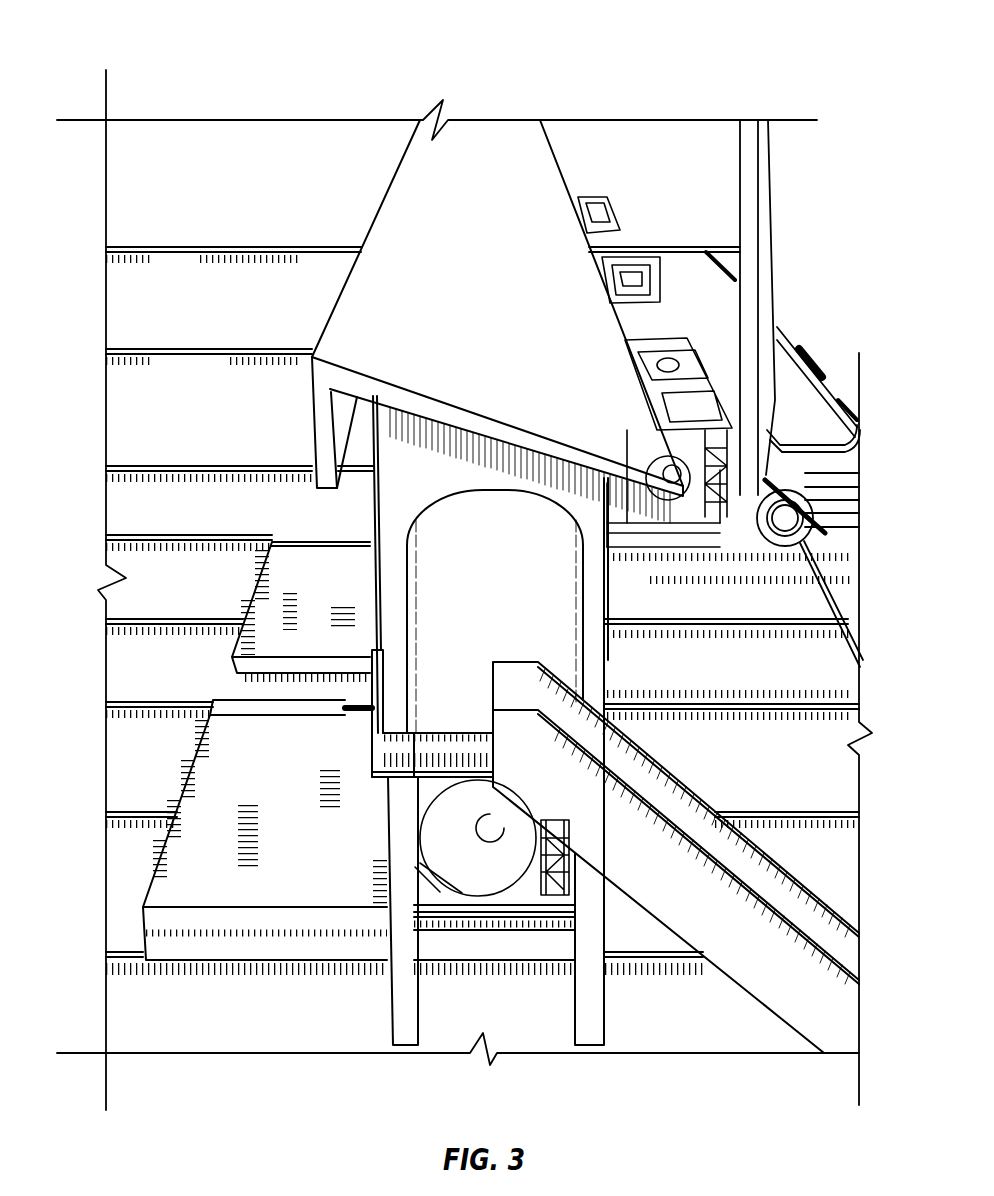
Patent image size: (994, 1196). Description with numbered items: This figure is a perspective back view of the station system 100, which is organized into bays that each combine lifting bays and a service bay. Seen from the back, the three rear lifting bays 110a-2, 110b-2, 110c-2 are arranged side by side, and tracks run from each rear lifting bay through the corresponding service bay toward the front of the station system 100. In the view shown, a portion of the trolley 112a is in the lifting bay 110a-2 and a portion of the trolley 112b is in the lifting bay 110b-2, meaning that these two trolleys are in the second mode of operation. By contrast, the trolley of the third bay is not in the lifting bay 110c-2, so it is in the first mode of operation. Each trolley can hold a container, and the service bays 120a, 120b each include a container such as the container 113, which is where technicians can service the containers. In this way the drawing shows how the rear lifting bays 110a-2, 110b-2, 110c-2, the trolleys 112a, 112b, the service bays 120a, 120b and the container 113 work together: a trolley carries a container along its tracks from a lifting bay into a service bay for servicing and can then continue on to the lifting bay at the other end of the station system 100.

The station system 100 is at (140, 60).
The lifting bay 110a-2 is at (161, 784).
The lifting bay 110b-2 is at (161, 564).
The lifting bay 110c-2 is at (161, 321).
The trolley 112a is at (284, 761).
The trolley 112b is at (345, 576).
The container 113 is at (487, 815).
The service bay 120a is at (462, 708).
The service bay 120b is at (483, 505).